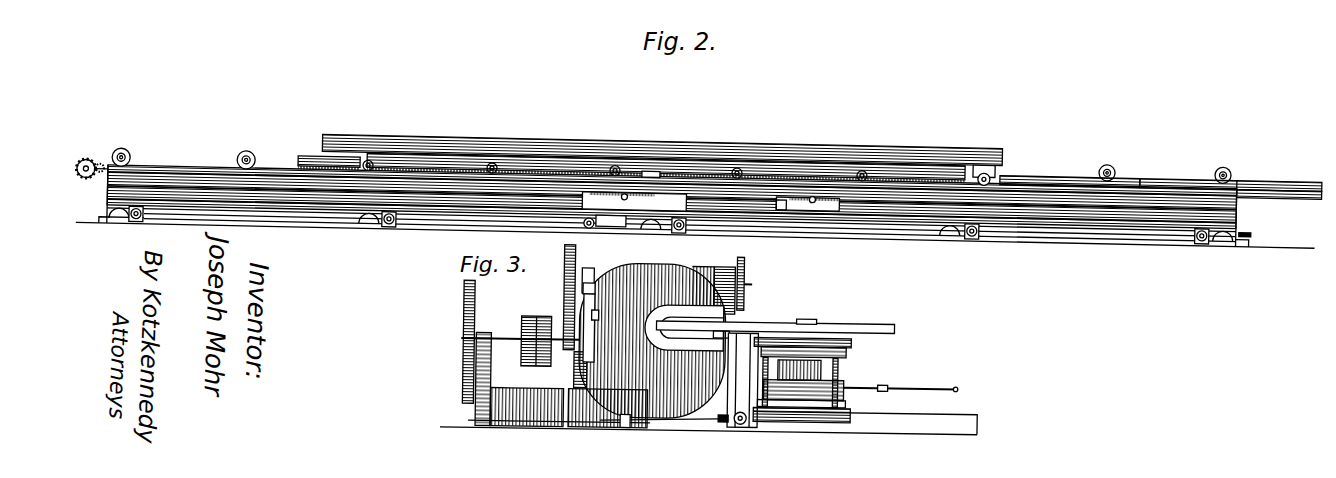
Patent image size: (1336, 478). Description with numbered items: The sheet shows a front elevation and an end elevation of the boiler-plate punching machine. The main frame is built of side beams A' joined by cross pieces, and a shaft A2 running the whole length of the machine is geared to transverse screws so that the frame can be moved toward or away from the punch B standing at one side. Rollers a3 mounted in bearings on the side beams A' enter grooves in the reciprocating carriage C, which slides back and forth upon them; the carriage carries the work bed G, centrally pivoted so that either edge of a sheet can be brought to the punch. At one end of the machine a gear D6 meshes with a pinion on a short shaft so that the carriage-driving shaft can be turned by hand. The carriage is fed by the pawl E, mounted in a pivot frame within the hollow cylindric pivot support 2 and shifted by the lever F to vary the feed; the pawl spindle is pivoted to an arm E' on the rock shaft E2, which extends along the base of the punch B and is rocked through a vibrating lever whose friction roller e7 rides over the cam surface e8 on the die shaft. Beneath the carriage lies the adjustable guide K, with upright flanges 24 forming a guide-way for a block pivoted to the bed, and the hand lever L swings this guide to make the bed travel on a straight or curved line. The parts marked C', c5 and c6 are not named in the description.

In FIG. 2, the side beam A' is at (671, 219).
In FIG. 3, the side beam A' is at (865, 413).
In FIG. 2, the shaft A2 is at (343, 214).
In FIG. 2, the gear D6 is at (92, 153).
In FIG. 2, the roller a3 is at (131, 159).
In FIG. 2, the rack section C' is at (325, 150).
In FIG. 3, the rack section C' is at (825, 366).
In FIG. 2, the reciprocating carriage C is at (662, 147).
In FIG. 3, the reciprocating carriage C is at (844, 357).
In FIG. 2, the work bed G is at (598, 129).
In FIG. 3, the work bed G is at (847, 331).
In FIG. 2, the lever F is at (625, 182).
In FIG. 3, the lever F is at (935, 381).
In FIG. 2, the hollow cylindric pivot support 2 is at (651, 158).
In FIG. 2, the hand lever L is at (813, 188).
In FIG. 2, the flange 24 is at (1030, 162).
In FIG. 2, the adjustable guide K is at (1167, 161).
In FIG. 3, the punch B is at (671, 264).
In FIG. 3, the pawl E is at (800, 339).
In FIG. 3, the arm E' is at (603, 302).
In FIG. 3, the rock shaft E2 is at (725, 411).
In FIG. 3, the friction roller e7 is at (591, 283).
In FIG. 3, the cam surface e8 is at (584, 267).
In FIG. 3, the pulley c5 is at (571, 377).
In FIG. 3, the gear wheel c6 is at (563, 300).